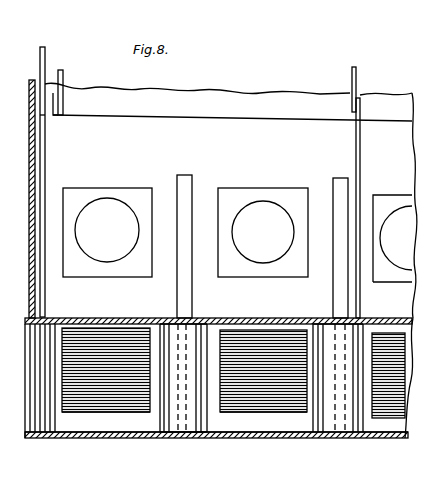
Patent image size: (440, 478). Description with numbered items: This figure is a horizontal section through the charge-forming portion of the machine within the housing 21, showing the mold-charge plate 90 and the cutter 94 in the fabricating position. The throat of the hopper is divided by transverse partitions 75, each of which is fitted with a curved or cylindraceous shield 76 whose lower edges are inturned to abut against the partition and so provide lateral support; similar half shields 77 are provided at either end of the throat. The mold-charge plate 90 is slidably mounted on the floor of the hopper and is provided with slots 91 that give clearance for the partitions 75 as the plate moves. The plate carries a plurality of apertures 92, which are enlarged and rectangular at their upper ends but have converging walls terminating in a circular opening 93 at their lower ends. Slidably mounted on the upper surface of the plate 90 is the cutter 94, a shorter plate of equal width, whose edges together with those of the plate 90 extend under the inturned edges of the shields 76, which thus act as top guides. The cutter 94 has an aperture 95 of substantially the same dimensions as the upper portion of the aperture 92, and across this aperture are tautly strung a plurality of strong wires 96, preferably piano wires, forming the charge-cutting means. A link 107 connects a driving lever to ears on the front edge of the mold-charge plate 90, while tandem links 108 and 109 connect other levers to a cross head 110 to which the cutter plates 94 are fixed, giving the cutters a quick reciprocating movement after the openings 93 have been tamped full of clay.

The housing 21 is at (32, 90).
The transverse partition 75 is at (165, 320).
The cylindraceous shield 76 is at (203, 318).
The half shield 77 is at (48, 320).
The mold-charge plate 90 is at (231, 200).
The slot 91 is at (192, 200).
The aperture 92 is at (113, 213).
The circular opening 93 is at (243, 234).
The cutter 94 is at (184, 380).
The aperture 95 is at (268, 332).
The wire 96 is at (120, 390).
The link 107 is at (65, 88).
The tandem link 108 is at (45, 57).
The tandem link 109 is at (45, 154).
The cross head 110 is at (204, 318).